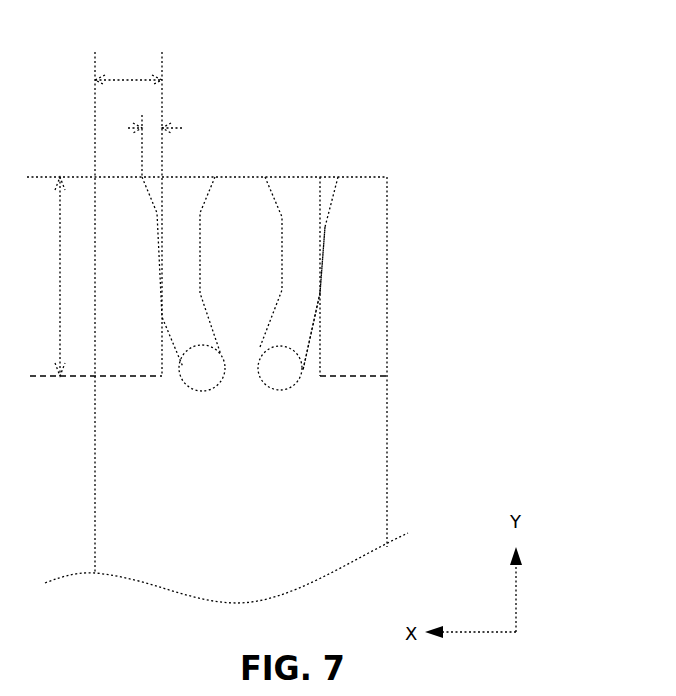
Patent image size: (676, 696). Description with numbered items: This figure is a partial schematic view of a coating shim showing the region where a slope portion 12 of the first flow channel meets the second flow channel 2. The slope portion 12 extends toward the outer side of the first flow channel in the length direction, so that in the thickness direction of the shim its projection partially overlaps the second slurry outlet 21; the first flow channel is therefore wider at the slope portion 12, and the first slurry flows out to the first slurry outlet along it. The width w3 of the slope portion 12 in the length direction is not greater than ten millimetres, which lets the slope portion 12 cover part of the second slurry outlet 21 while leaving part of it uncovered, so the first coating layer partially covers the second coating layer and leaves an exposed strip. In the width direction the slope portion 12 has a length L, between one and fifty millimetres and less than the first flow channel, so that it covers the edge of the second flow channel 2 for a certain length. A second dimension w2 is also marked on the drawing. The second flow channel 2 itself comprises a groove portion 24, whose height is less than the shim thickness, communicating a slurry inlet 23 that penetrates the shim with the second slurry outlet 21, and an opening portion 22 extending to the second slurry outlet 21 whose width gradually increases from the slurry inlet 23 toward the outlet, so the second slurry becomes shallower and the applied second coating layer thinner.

The second flow channel 2 is at (358, 258).
The slope portion 12 is at (118, 213).
The second slurry outlet 21 is at (303, 177).
The opening portion 22 is at (307, 198).
The slurry inlet 23 is at (343, 370).
The groove portion 24 is at (308, 273).
The width w2 is at (152, 125).
The width of the slope portion w3 is at (123, 80).
The length of the slope portion L is at (43, 276).